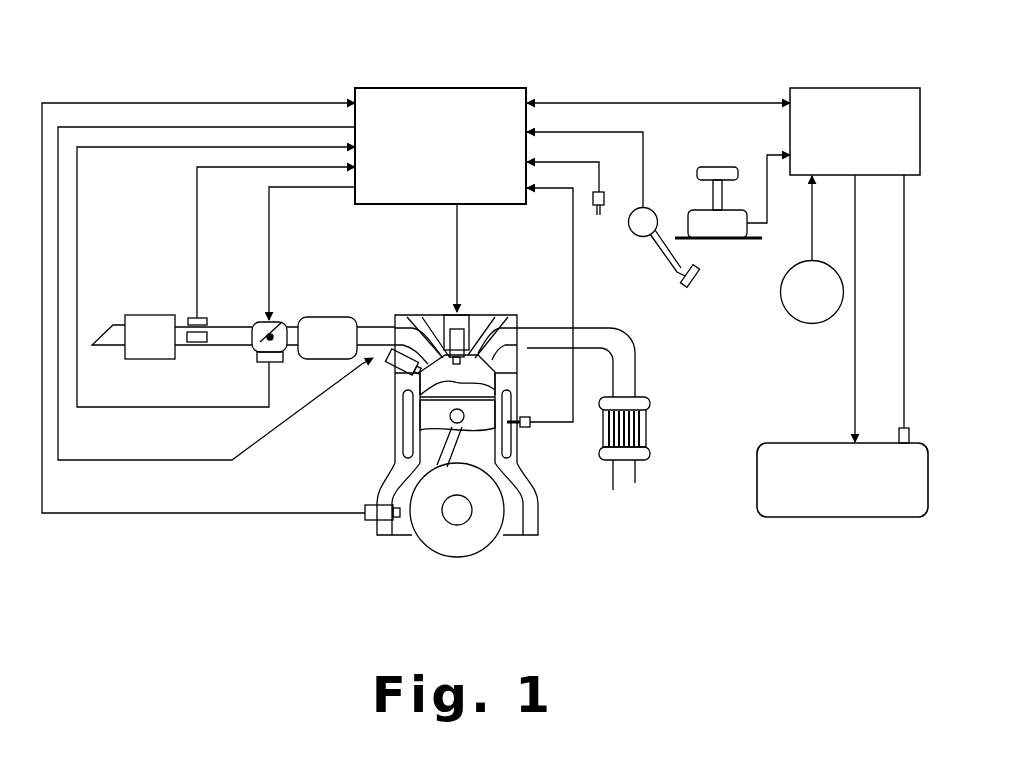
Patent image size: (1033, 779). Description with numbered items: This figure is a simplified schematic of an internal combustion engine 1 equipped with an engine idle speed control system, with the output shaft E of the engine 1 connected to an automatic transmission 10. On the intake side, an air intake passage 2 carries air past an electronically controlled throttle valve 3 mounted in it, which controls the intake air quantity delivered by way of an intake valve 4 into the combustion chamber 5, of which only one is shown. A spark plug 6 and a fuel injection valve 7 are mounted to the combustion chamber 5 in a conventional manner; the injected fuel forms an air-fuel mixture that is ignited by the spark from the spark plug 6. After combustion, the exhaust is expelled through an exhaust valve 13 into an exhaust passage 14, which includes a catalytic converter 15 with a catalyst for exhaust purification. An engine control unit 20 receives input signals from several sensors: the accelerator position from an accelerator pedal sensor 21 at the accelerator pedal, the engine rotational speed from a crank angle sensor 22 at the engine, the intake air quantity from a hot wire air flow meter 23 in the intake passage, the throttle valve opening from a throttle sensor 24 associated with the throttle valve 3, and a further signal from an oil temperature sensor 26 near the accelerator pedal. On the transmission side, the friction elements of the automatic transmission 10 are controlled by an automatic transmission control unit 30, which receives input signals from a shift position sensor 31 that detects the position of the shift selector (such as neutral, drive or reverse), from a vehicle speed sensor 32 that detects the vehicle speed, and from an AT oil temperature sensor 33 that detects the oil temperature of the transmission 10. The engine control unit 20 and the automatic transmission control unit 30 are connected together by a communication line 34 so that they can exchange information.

The internal combustion engine 1 is at (542, 534).
The air intake passage 2 is at (115, 323).
The electronically controlled throttle valve 3 is at (256, 323).
The intake valve 4 is at (405, 308).
The combustion chamber 5 is at (437, 378).
The spark plug 6 is at (461, 316).
The fuel injection valve 7 is at (380, 370).
The automatic transmission 10 is at (848, 517).
The exhaust valve 13 is at (510, 305).
The exhaust passage 14 is at (593, 328).
The catalytic converter 15 is at (650, 425).
The engine control unit 20 is at (480, 88).
The accelerator pedal sensor 21 is at (653, 210).
The crank angle sensor 22 is at (372, 522).
The air flow meter 23 is at (189, 318).
The throttle sensor 24 is at (257, 358).
The oil temperature sensor 26 is at (598, 215).
The automatic transmission control unit 30 is at (822, 88).
The shift position sensor 31 is at (733, 240).
The vehicle speed sensor 32 is at (797, 320).
The AT oil temperature sensor 33 is at (900, 428).
The communication line 34 is at (702, 103).
The output shaft E is at (460, 512).